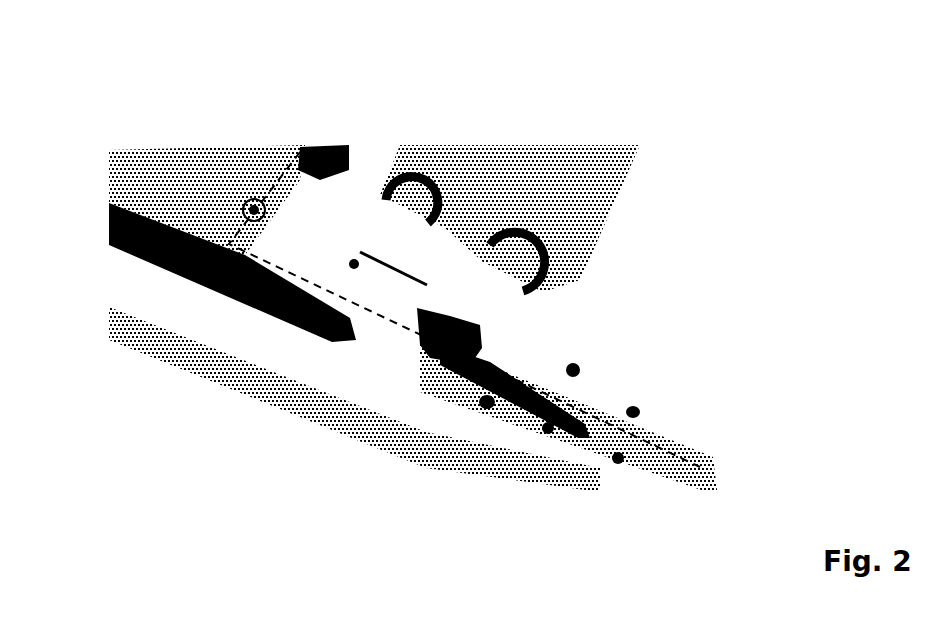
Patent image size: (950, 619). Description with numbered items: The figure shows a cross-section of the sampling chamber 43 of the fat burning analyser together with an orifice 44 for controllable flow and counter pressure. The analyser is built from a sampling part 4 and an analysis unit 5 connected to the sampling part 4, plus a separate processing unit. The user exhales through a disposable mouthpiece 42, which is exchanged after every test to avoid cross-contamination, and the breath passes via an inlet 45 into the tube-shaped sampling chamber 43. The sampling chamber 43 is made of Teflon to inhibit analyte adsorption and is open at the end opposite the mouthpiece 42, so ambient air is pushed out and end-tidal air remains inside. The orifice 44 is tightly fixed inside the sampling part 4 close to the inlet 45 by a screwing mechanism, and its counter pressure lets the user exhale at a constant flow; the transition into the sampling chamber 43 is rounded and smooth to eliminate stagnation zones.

The sampling part 4 is at (247, 112).
The analysis unit 5 is at (358, 152).
The mouthpiece 42 is at (622, 397).
The sampling chamber 43 is at (140, 234).
The orifice 44 is at (368, 337).
The inlet 45 is at (530, 413).